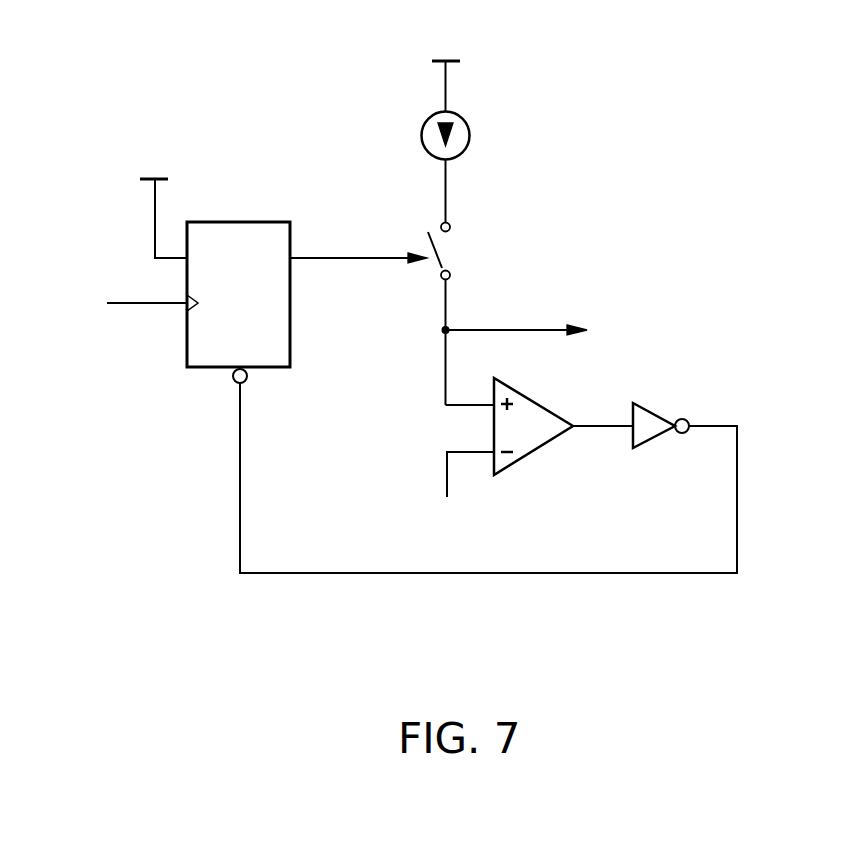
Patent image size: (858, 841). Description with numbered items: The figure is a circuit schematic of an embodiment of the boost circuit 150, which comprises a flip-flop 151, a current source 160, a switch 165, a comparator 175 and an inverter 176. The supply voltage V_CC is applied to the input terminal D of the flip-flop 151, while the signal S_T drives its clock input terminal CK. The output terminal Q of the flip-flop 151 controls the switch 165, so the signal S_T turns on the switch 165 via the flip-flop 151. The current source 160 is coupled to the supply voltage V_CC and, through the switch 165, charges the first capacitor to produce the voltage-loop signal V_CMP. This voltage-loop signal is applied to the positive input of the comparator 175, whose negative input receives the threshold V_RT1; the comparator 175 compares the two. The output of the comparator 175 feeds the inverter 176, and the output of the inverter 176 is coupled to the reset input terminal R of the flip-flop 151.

The boost circuit 150 is at (798, 130).
The flip-flop 151 is at (252, 264).
The current source 160 is at (472, 124).
The switch 165 is at (462, 314).
The comparator 175 is at (527, 453).
The inverter 176 is at (488, 477).